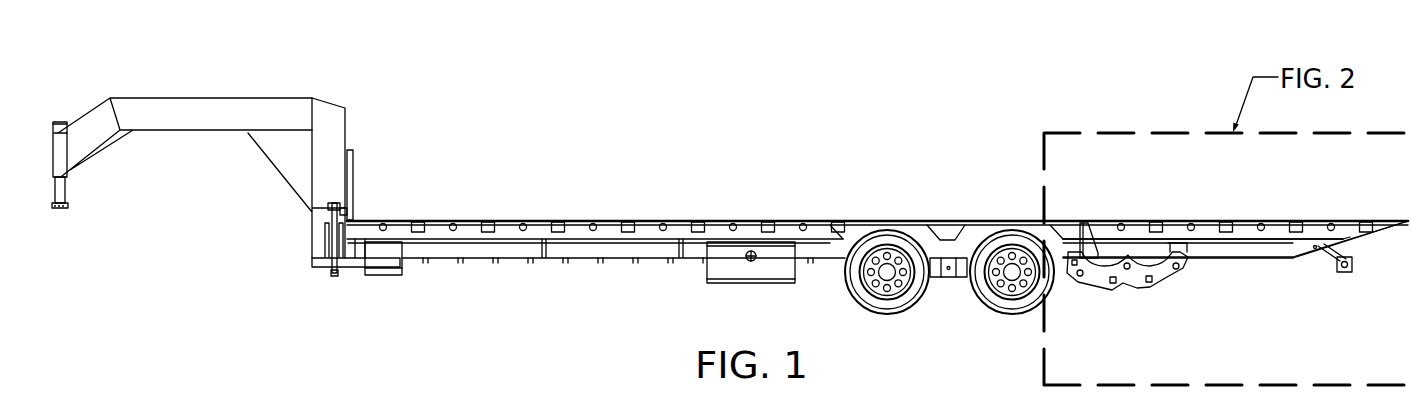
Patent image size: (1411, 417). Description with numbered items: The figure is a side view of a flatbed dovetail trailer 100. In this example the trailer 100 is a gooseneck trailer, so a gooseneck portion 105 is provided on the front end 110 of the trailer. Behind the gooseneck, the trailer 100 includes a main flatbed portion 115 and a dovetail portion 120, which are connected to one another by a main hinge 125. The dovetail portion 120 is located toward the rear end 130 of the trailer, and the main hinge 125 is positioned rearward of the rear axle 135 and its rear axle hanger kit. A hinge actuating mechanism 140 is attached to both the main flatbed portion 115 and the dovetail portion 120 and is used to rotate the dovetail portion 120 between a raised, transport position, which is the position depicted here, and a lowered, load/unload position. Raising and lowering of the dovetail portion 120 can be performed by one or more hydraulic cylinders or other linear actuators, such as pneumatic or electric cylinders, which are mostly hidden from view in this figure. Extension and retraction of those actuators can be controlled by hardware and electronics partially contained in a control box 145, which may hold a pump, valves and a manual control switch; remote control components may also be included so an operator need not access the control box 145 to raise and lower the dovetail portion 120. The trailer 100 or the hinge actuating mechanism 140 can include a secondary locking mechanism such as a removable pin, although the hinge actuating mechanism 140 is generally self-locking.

The flatbed dovetail trailer 100 is at (730, 202).
The gooseneck portion 105 is at (188, 97).
The front end 110 is at (358, 83).
The main flatbed portion 115 is at (672, 219).
The dovetail portion 120 is at (1208, 220).
The main hinge 125 is at (1083, 222).
The rear end 130 is at (1395, 214).
The rear axle 135 is at (1012, 280).
The hinge actuating mechanism 140 is at (1128, 304).
The control box 145 is at (706, 275).